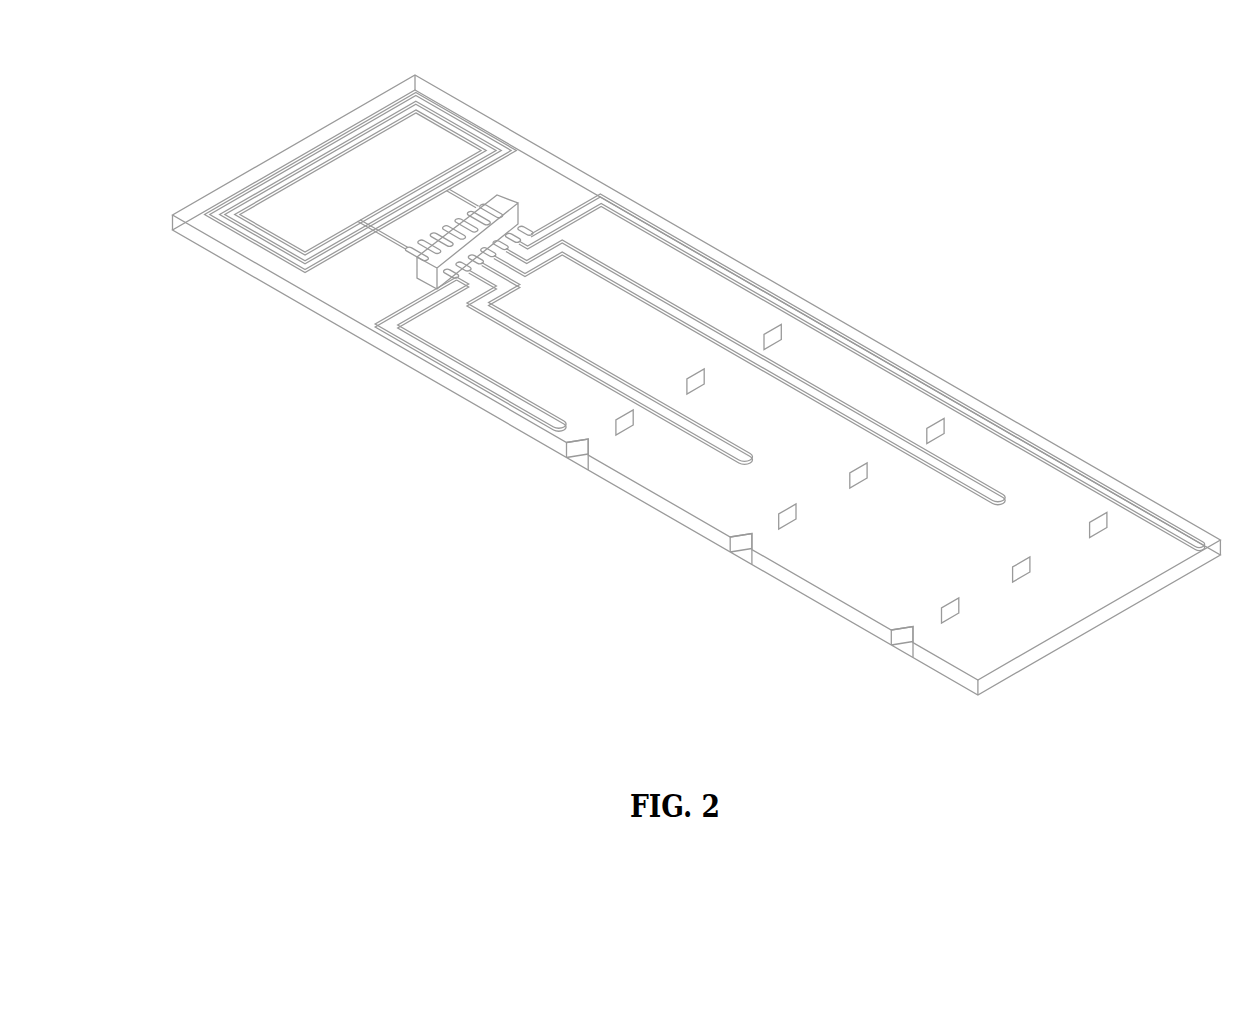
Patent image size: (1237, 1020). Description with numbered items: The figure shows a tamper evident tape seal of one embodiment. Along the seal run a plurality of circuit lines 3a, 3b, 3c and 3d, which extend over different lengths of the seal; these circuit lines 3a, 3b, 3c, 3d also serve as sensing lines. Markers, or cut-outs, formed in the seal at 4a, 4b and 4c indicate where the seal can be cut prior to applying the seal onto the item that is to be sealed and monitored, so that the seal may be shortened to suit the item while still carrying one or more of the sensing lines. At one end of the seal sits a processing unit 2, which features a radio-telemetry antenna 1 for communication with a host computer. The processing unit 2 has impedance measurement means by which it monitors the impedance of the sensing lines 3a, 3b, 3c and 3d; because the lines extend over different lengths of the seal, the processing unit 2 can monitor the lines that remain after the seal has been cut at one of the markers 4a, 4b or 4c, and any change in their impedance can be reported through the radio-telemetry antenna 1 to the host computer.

The radio-telemetry antenna 1 is at (487, 128).
The processing unit 2 is at (390, 285).
The circuit line 3a is at (588, 194).
The circuit line 3b is at (624, 260).
The circuit line 3c is at (573, 337).
The circuit line 3d is at (531, 396).
The marker 4a is at (562, 469).
The marker 4b is at (724, 566).
The marker 4c is at (882, 654).